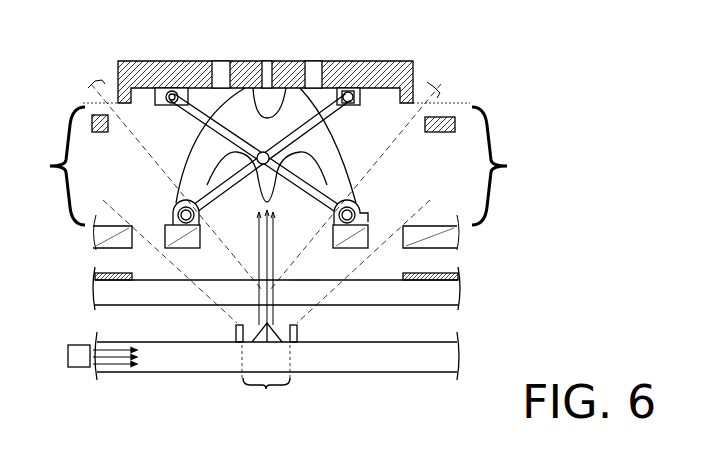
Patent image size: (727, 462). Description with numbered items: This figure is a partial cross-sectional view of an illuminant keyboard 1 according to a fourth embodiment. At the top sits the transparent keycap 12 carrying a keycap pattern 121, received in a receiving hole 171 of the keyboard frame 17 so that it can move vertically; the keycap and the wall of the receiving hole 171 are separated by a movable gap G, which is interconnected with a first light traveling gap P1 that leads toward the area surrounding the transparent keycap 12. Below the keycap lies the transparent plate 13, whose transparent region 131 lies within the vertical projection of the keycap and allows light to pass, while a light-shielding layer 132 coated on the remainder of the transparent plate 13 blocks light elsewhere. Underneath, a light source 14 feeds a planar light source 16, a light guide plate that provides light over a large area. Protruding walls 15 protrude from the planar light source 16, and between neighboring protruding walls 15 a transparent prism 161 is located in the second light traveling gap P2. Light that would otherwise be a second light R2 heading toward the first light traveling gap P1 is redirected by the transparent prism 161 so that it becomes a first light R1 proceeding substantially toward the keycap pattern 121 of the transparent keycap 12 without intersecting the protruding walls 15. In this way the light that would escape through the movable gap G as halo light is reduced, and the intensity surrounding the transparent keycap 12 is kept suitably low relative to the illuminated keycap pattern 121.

The illuminant keyboard 1 is at (28, 33).
The transparent keycap 12 is at (405, 72).
The keycap pattern 121 is at (302, 62).
The transparent plate 13 is at (436, 298).
The transparent region 131 is at (300, 280).
The light-shielding layer 132 is at (430, 274).
The light source 14 is at (72, 345).
The protruding walls 15 is at (299, 332).
The planar light source 16 is at (366, 347).
The transparent prism 161 is at (281, 342).
The keyboard frame 17 is at (426, 131).
The receiving hole 171 is at (108, 122).
The movable gap G is at (276, 193).
The first light R1 is at (269, 206).
The second light R2 is at (269, 111).
The first light traveling gap P1 is at (276, 166).
The second light traveling gap P2 is at (266, 380).